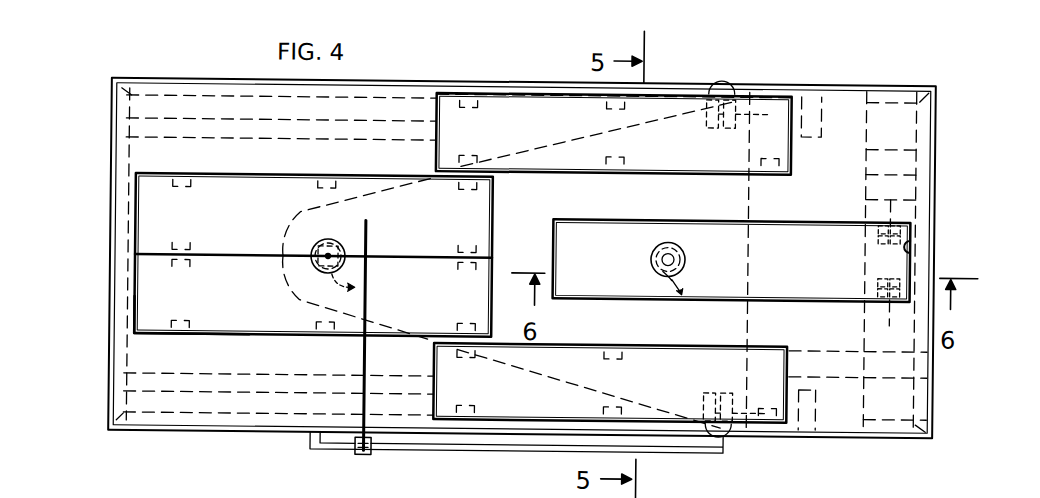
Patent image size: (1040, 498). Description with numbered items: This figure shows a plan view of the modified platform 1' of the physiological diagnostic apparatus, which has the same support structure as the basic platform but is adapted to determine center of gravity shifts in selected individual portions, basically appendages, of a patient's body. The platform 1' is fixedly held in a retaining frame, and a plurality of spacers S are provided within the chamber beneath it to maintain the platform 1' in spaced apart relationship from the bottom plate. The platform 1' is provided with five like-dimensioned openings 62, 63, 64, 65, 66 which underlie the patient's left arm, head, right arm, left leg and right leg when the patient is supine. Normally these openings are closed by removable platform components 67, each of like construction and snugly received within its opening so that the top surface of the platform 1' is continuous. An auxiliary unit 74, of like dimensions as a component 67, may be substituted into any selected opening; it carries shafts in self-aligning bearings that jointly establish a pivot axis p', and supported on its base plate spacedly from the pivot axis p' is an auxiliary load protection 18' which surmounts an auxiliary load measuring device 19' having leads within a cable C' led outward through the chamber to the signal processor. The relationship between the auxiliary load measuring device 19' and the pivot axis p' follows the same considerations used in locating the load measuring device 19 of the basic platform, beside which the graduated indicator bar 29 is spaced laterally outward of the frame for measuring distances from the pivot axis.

The platform 1' is at (553, 258).
The load measuring device 19 is at (339, 258).
The auxiliary load measuring device 19' is at (681, 240).
The auxiliary load protection 18' is at (645, 299).
The indicator bar 29 is at (442, 453).
The opening 62 is at (757, 421).
The opening 63 is at (912, 241).
The opening 64 is at (780, 97).
The opening 65 is at (225, 336).
The opening 66 is at (213, 178).
The removable platform component 67 is at (512, 400).
The auxiliary unit 74 is at (797, 230).
The spacers S is at (292, 392).
The cable C' is at (698, 306).
The pivot axis p' is at (857, 260).